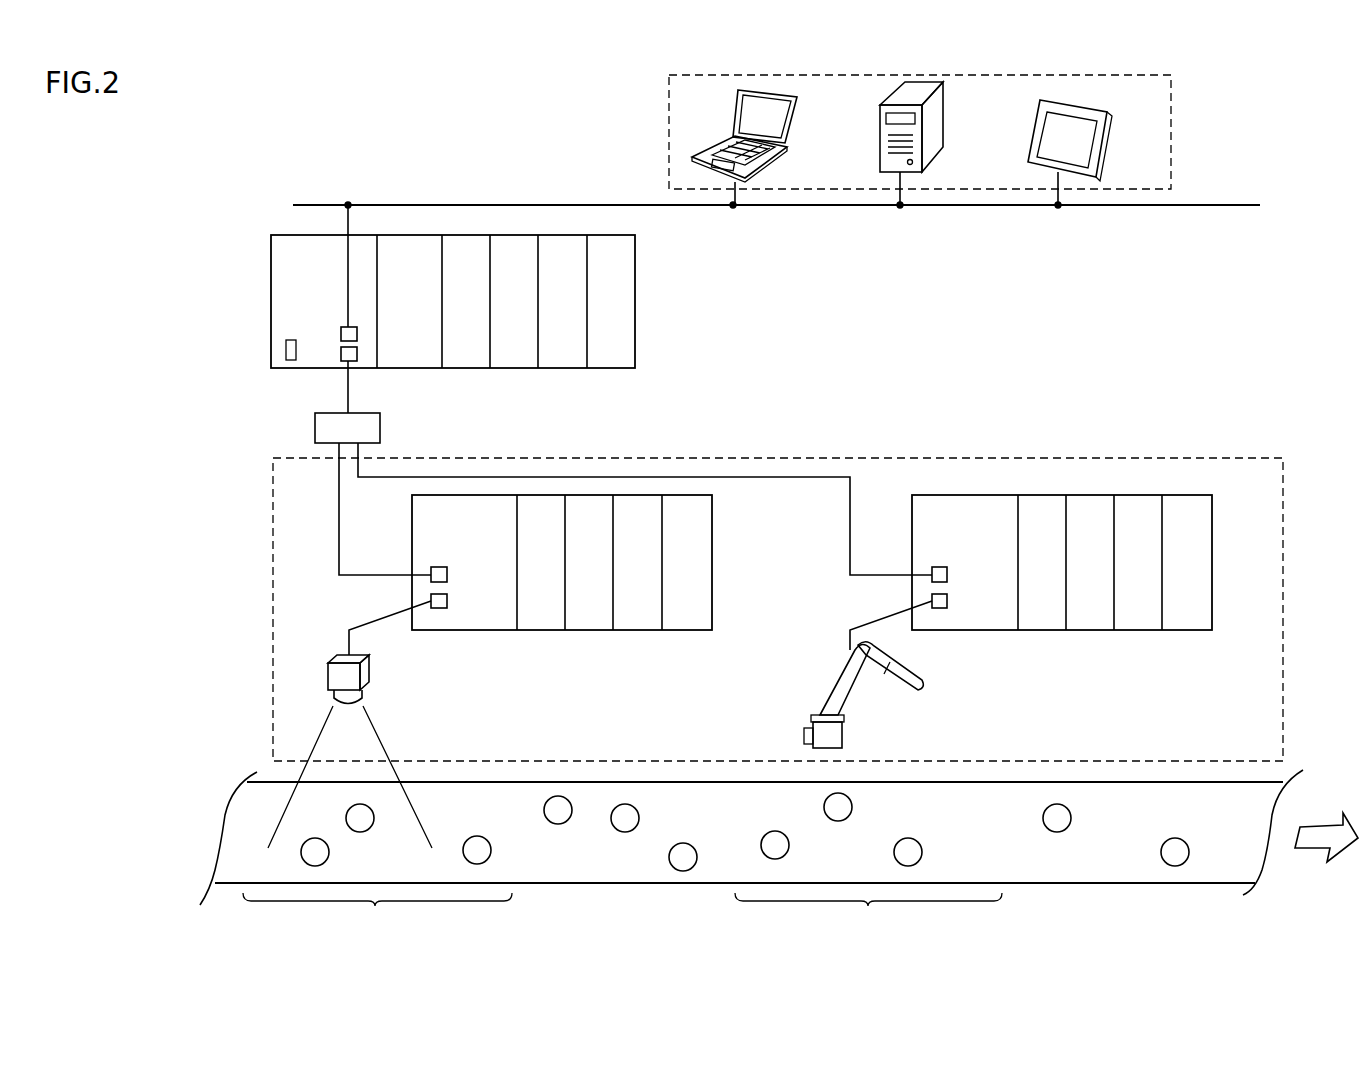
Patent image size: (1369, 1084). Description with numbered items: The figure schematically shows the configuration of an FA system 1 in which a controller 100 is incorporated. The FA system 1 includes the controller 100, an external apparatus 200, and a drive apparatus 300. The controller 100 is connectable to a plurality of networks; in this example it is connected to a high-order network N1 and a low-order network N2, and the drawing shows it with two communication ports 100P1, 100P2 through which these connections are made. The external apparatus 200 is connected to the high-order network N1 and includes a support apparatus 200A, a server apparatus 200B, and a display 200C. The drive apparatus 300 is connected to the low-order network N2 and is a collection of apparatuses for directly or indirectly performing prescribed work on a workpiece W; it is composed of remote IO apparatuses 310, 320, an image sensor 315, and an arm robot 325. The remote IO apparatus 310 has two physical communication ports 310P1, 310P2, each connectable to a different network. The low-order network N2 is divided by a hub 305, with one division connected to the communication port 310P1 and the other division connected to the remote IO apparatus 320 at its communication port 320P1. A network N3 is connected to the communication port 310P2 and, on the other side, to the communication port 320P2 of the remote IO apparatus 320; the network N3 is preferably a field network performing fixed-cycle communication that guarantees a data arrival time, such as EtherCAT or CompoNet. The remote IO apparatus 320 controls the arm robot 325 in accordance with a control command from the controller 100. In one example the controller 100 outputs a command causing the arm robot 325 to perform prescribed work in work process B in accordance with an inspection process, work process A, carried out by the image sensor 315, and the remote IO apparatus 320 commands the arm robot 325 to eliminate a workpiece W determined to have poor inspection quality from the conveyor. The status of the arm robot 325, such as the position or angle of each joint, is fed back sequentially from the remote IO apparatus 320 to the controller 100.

The FA system 1 is at (1352, 92).
The controller 100 is at (468, 299).
The communication port 100P1 is at (340, 334).
The communication port 100P2 is at (340, 353).
The external apparatus 200 is at (1172, 134).
The support apparatus 200A is at (796, 118).
The server apparatus 200B is at (946, 122).
The display 200C is at (1082, 104).
The drive apparatus 300 is at (1220, 458).
The hub 305 is at (381, 428).
The remote IO apparatus 310 is at (593, 580).
The communication port 310P1 is at (437, 567).
The communication port 310P2 is at (437, 609).
The image sensor 315 is at (372, 681).
The remote IO apparatus 320 is at (1095, 580).
The communication port 320P1 is at (937, 567).
The communication port 320P2 is at (937, 609).
The arm robot 325 is at (843, 733).
The high-order network N1 is at (1210, 205).
The low-order network N2 is at (347, 392).
The network N3 is at (358, 623).
The workpiece W is at (558, 825).